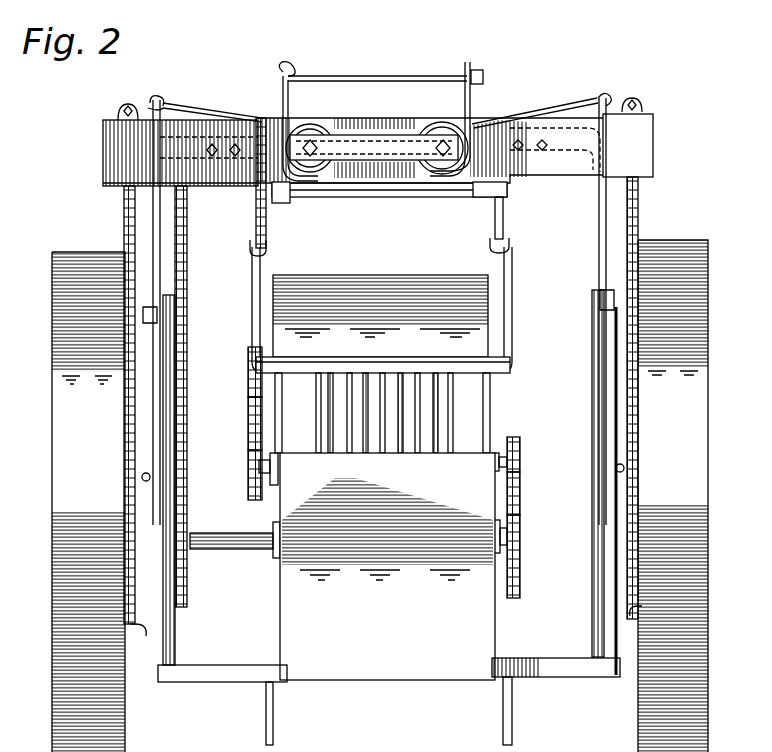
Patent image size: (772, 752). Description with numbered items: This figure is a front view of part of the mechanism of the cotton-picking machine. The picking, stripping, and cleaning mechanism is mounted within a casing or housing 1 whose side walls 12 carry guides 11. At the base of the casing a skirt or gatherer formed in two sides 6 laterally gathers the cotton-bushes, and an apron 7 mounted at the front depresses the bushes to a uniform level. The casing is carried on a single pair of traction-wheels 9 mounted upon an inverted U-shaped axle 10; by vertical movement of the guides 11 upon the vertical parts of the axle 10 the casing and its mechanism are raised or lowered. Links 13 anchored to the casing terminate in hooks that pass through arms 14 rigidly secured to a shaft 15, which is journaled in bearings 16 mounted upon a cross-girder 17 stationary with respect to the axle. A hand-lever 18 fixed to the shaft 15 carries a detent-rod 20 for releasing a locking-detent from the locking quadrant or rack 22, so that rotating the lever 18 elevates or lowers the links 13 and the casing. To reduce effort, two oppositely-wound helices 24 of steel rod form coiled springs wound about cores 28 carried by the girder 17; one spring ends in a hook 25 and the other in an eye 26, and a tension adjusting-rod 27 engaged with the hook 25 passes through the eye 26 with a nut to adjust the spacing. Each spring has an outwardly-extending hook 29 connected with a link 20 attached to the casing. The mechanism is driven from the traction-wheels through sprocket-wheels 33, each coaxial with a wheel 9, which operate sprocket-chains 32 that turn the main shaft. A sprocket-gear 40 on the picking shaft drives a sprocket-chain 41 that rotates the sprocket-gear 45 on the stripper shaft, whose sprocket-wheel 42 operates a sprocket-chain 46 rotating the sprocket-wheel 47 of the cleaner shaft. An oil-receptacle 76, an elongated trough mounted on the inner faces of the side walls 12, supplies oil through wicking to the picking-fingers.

The casing or housing 1 is at (511, 357).
The skirt or gatherer sides 6 is at (504, 720).
The apron 7 is at (387, 566).
The traction-wheels 9 is at (60, 620).
The U-shaped axle 10 is at (146, 219).
The guides 11 is at (170, 462).
The side walls 12 is at (380, 302).
The links 13 is at (252, 320).
The arms 14 is at (252, 236).
The shaft 15 is at (379, 197).
The bearings 16 is at (283, 204).
The cross-girder 17 is at (640, 154).
The hand-lever 18 is at (259, 122).
The detent-rod 20 is at (161, 281).
The locking quadrant or rack 22 is at (257, 165).
The helices 24 is at (323, 128).
The hook 25 is at (289, 70).
The eye 26 is at (471, 66).
The tension adjusting-rod 27 is at (415, 75).
The cores 28 is at (318, 168).
The outwardly-extending hook 29 is at (166, 104).
The sprocket-chains 32 is at (125, 336).
The sprocket-wheels 33 is at (385, 630).
The sprocket-gear 40 is at (520, 590).
The sprocket-chain 41 is at (520, 503).
The sprocket-wheel 42 is at (250, 483).
The sprocket-gear 45 is at (520, 462).
The sprocket-chain 46 is at (256, 410).
The sprocket-wheel 47 is at (250, 378).
The oil-receptacle 76 is at (556, 704).